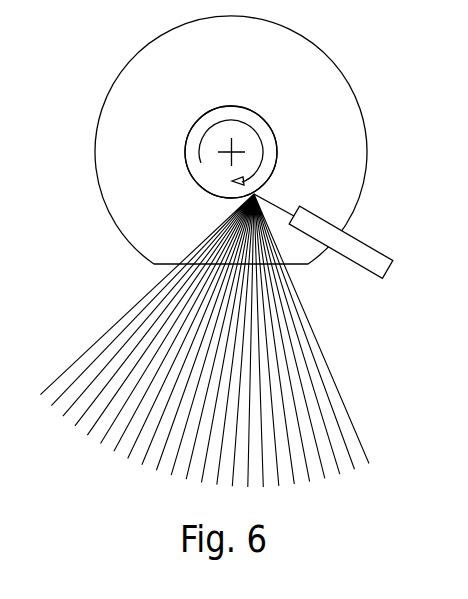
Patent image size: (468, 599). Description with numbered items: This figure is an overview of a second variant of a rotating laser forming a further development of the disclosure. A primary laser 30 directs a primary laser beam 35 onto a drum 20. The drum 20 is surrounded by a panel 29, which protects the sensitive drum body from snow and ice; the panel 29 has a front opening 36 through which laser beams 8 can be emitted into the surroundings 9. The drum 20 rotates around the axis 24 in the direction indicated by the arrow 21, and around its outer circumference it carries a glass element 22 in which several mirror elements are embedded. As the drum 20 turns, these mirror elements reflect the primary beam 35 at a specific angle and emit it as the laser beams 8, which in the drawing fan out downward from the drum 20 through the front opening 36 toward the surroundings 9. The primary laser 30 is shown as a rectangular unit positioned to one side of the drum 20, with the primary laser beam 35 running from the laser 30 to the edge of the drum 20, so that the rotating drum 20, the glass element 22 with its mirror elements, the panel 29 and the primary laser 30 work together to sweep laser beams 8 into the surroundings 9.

The laser beams 8 is at (334, 374).
The surroundings 9 is at (65, 505).
The drum 20 is at (197, 124).
The arrow 21 is at (255, 128).
The glass element 22 is at (277, 143).
The axis 24 is at (223, 157).
The panel 29 is at (96, 160).
The primary laser 30 is at (357, 252).
The primary laser beam 35 is at (281, 209).
The front opening 36 is at (299, 265).